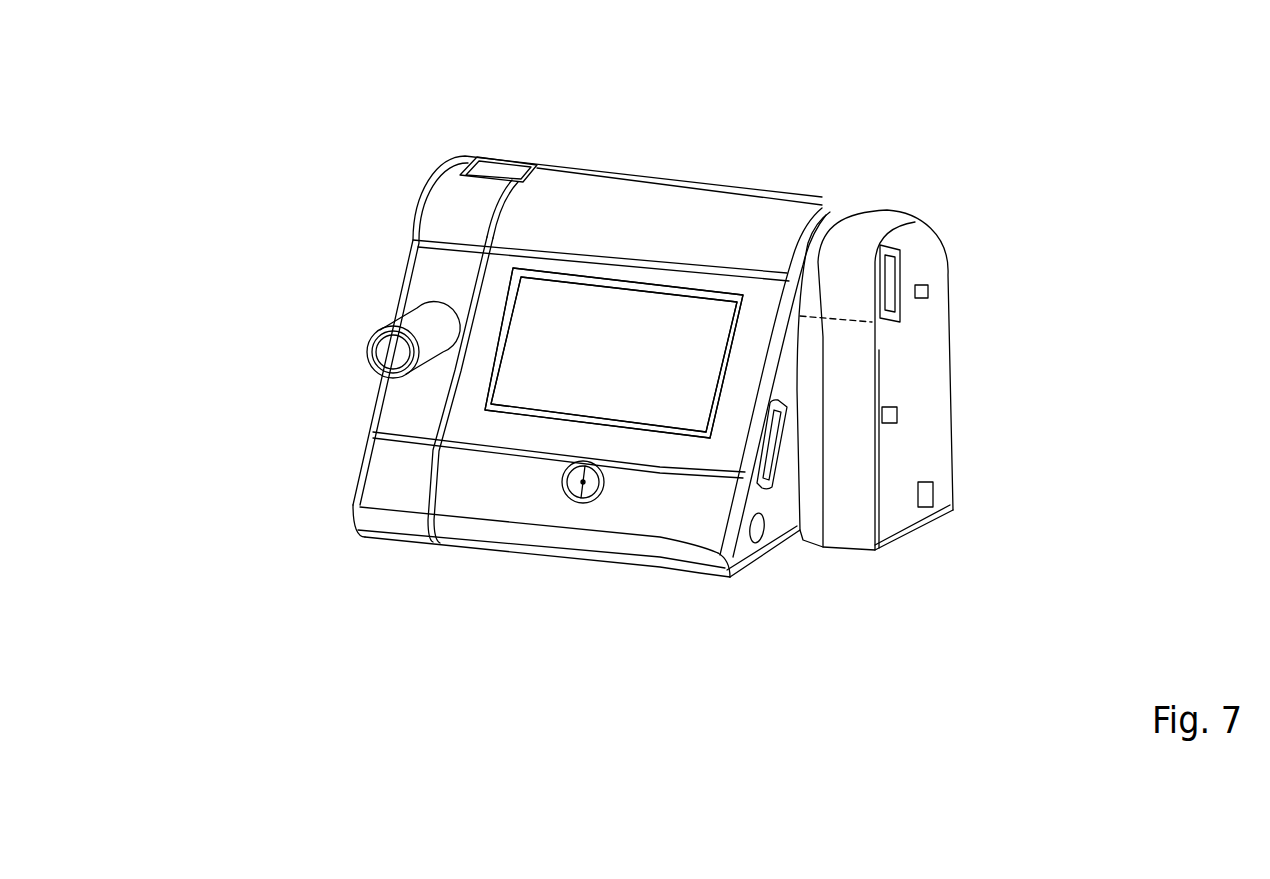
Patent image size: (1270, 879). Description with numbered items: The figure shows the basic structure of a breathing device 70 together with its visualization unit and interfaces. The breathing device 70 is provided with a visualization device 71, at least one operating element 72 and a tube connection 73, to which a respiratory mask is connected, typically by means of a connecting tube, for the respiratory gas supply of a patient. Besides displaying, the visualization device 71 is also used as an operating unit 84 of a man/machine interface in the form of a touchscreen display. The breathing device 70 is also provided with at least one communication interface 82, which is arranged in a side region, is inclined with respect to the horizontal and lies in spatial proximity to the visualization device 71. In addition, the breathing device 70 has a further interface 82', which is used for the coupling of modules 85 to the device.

The breathing device 70 is at (558, 207).
The visualization device 71 is at (580, 368).
The operating unit 84 is at (580, 368).
The operating element 72 is at (568, 485).
The tube connection 73 is at (427, 333).
The communication interface 82 is at (950, 524).
The further interface 82' is at (971, 239).
The module 85 is at (910, 378).